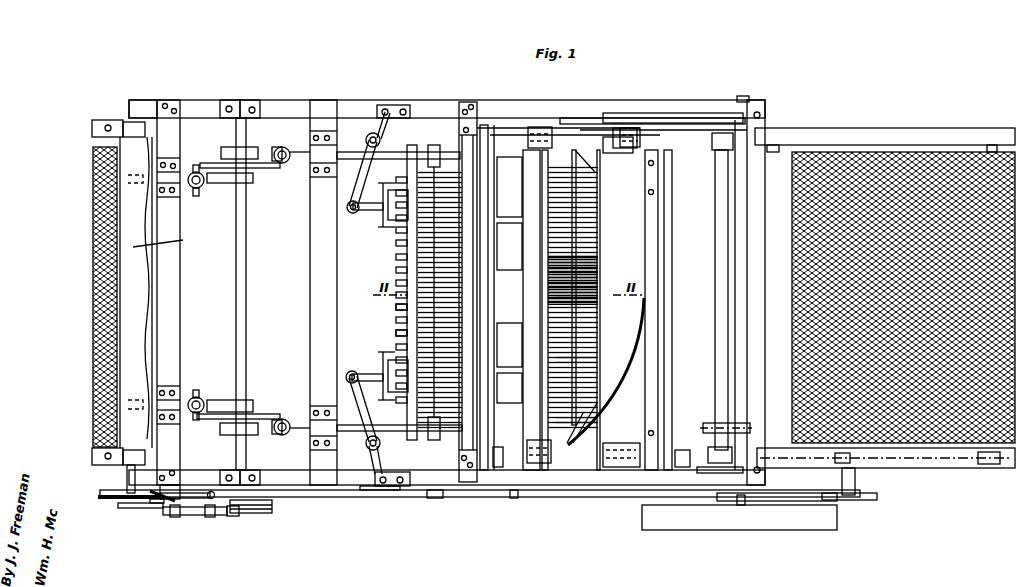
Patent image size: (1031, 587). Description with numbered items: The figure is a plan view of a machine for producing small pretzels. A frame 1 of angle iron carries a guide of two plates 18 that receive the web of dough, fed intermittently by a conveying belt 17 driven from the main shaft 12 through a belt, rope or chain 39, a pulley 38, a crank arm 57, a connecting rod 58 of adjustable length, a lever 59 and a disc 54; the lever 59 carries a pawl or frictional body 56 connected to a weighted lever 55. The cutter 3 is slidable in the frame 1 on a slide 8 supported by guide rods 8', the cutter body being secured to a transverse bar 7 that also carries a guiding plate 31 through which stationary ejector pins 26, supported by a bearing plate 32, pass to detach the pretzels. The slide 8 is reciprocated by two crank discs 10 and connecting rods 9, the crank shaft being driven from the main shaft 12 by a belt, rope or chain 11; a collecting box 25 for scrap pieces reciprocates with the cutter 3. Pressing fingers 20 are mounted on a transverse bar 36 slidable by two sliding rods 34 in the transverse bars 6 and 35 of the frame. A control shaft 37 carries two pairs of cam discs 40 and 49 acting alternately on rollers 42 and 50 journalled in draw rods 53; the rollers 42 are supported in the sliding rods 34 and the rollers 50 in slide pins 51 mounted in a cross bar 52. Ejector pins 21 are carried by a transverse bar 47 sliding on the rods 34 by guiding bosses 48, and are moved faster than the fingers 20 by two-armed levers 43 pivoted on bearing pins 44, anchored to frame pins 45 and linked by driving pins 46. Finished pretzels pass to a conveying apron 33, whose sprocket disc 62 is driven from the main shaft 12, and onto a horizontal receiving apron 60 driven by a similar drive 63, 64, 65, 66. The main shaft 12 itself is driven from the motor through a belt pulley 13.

The frame 1 is at (200, 109).
The cutter 3 is at (597, 252).
The transverse bar 6 is at (462, 140).
The transverse bar 7 is at (517, 422).
The slide 8 is at (575, 300).
The guide rods 8' is at (637, 300).
The connecting rods 9 is at (650, 118).
The crank discs 10 is at (700, 125).
The belt, rope or chain 11 is at (708, 423).
The main shaft 12 is at (742, 505).
The belt pulley 13 is at (694, 525).
The conveying belt 17 is at (171, 238).
The guide plates 18 is at (477, 140).
The pressing fingers 20 is at (415, 307).
The ejector pins 21 is at (415, 333).
The collecting box 25 is at (641, 377).
The ejector pins 26 is at (598, 300).
The guiding plate 31 is at (598, 362).
The bearing plate 32 is at (598, 421).
The conveying apron 33 is at (780, 160).
The sliding rods 34 is at (352, 152).
The transverse bar 35 is at (338, 497).
The transverse bar 36 is at (415, 380).
The control shaft 37 is at (246, 298).
The pulley 38 is at (245, 516).
The belt, rope or chain 39 is at (378, 498).
The cam discs 40 is at (252, 150).
The rollers 42 is at (281, 166).
The two-armed oscillating levers 43 is at (353, 214).
The bearing pins 44 is at (381, 140).
The pins 45 is at (384, 109).
The driving pins 46 is at (373, 195).
The transverse bar 47 is at (400, 228).
The guiding bosses 48 is at (425, 150).
The cam discs 49 is at (228, 184).
The rollers 50 is at (199, 189).
The slide pins 51 is at (194, 166).
The cross bar 52 is at (152, 295).
The draw rods 53 is at (268, 169).
The disc 54 is at (112, 500).
The weighted lever 55 is at (190, 490).
The pawl or frictional body 56 is at (160, 509).
The crank arm 57 is at (260, 514).
The connecting rod 58 is at (203, 516).
The lever 59 is at (150, 503).
The receiving apron 60 is at (86, 138).
The sprocket disc 62 is at (537, 498).
The drive 63 is at (793, 496).
The drive 64 is at (866, 500).
The drive 65 is at (934, 462).
The drive 66 is at (988, 465).